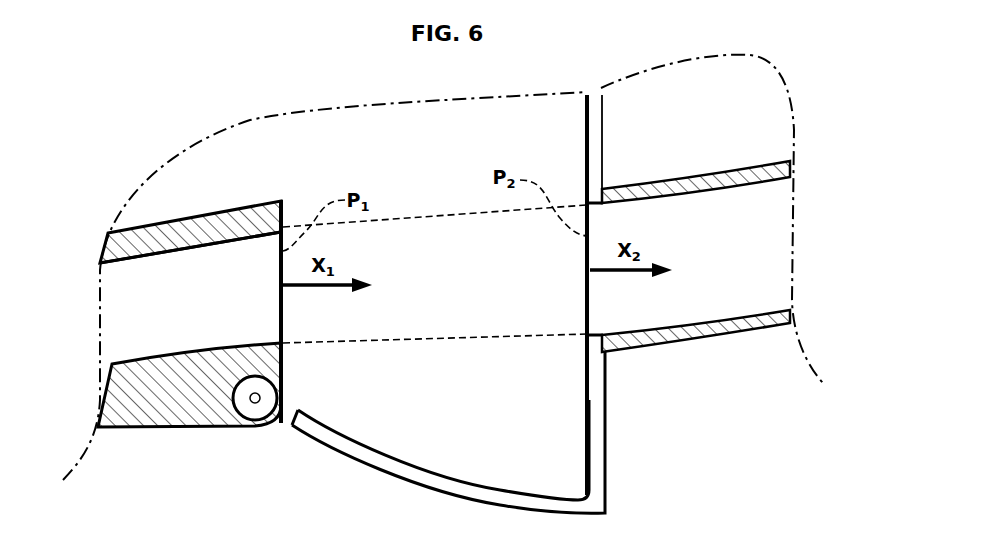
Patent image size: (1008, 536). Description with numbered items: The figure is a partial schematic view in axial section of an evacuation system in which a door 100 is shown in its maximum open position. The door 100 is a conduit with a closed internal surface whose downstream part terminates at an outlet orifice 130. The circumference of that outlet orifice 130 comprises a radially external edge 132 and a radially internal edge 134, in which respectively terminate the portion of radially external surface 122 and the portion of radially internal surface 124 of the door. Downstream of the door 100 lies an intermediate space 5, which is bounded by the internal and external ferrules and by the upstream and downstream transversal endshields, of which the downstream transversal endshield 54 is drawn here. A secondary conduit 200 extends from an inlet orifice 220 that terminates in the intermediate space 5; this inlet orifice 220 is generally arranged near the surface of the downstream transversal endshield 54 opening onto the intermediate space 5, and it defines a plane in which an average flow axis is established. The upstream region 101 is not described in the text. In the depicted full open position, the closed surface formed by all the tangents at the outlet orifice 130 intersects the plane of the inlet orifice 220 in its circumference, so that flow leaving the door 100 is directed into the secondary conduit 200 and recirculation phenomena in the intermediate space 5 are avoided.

The intermediate space 5 is at (449, 416).
The downstream transversal endshield 54 is at (603, 410).
The door 100 is at (208, 224).
The first region 101 is at (147, 316).
The portion of radially external surface 122 is at (222, 242).
The portion of radially internal surface 124 is at (226, 345).
The outlet orifice 130 is at (283, 306).
The radially external edge 132 is at (283, 226).
The radially internal edge 134 is at (283, 347).
The secondary conduit 200 is at (697, 186).
The inlet orifice 220 is at (587, 305).